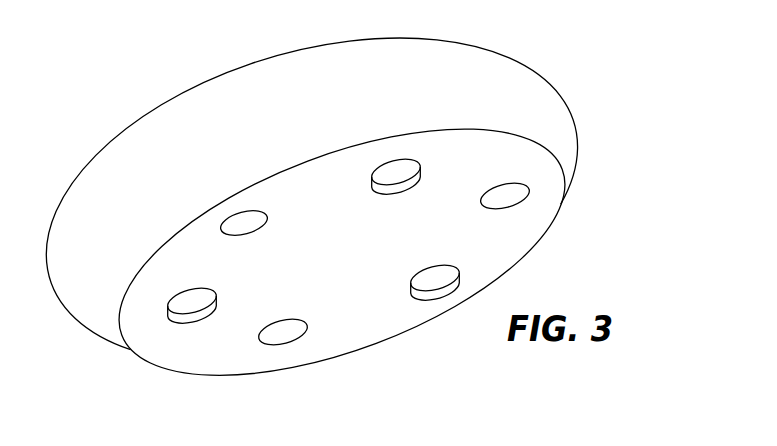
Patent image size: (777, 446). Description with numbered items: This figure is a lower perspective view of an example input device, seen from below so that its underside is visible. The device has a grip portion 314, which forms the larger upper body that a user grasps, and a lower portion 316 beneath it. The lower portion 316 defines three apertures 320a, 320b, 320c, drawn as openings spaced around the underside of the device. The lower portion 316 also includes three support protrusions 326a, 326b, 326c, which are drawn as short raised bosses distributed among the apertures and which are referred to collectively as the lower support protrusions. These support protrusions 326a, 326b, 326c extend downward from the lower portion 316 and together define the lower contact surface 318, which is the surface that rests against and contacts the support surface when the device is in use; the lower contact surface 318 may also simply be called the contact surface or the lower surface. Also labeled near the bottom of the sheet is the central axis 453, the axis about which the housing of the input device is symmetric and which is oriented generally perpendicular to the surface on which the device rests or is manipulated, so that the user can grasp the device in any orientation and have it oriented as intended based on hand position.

The grip portion 314 is at (125, 150).
The lower portion 316 is at (147, 343).
The lower contact surface 318 is at (320, 295).
The aperture 320a is at (250, 209).
The aperture 320b is at (571, 74).
The aperture 320c is at (294, 335).
The support protrusion 326a is at (190, 329).
The support protrusion 326b is at (386, 204).
The support protrusion 326c is at (417, 301).
The central axis 453 is at (555, 445).